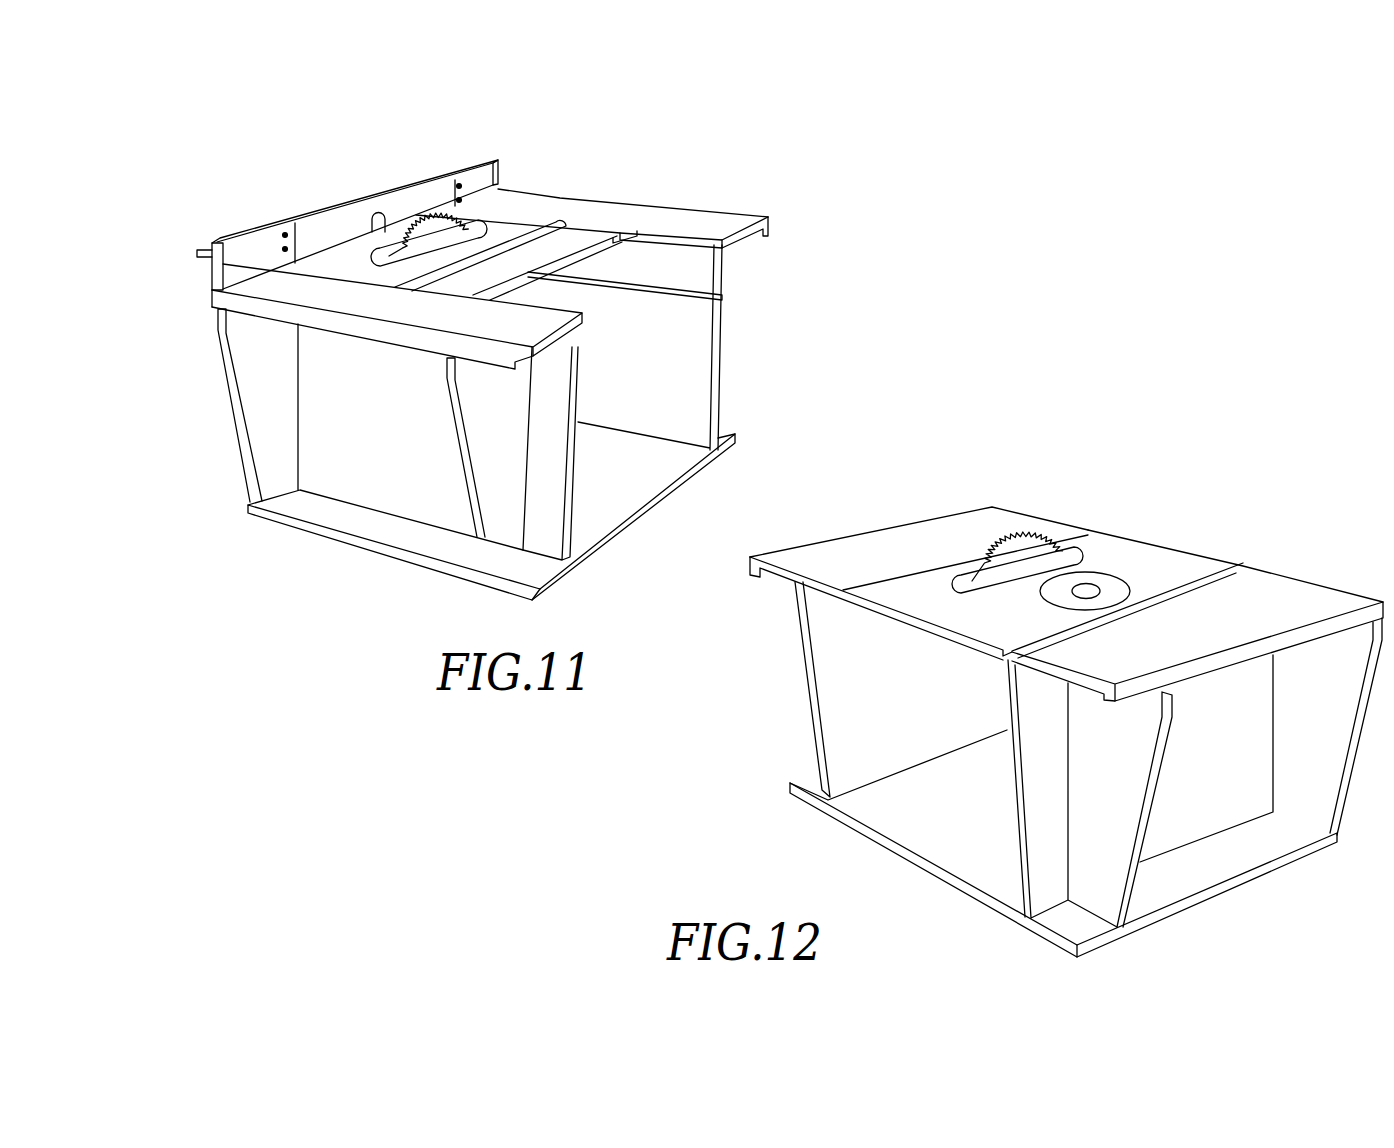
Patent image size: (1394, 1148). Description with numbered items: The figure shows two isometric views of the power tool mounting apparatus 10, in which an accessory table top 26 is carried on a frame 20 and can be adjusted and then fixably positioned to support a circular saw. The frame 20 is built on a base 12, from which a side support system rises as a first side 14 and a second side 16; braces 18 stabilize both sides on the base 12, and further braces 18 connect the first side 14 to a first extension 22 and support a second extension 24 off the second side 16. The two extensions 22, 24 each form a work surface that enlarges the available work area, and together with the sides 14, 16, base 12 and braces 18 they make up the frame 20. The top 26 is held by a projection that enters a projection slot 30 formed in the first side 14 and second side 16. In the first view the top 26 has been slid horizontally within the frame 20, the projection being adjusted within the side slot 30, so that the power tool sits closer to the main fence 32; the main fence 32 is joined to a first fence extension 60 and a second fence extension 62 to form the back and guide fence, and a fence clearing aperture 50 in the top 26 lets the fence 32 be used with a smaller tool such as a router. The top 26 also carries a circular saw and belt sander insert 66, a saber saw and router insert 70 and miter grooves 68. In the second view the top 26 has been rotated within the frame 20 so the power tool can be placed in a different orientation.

In FIG. 11, the power tool mounting apparatus 10 is at (643, 118).
In FIG. 12, the power tool mounting apparatus 10 is at (1235, 460).
In FIG. 11, the base 12 is at (737, 437).
In FIG. 12, the base 12 is at (907, 865).
In FIG. 11, the first side 14 is at (722, 346).
In FIG. 12, the first side 14 is at (1012, 862).
In FIG. 11, the second side 16 is at (576, 510).
In FIG. 12, the second side 16 is at (810, 723).
In FIG. 11, the braces 18 is at (236, 433).
In FIG. 12, the braces 18 is at (1351, 748).
In FIG. 11, the frame 20 is at (722, 389).
In FIG. 11, the first extension 22 is at (746, 216).
In FIG. 12, the first extension 22 is at (1302, 593).
In FIG. 11, the second extension 24 is at (265, 312).
In FIG. 12, the second extension 24 is at (1007, 518).
In FIG. 11, the accessory table top 26 is at (199, 257).
In FIG. 12, the accessory table top 26 is at (1222, 568).
In FIG. 11, the projection slot 30 is at (724, 295).
In FIG. 11, the main fence 32 is at (328, 206).
In FIG. 11, the fence clearing aperture 50 is at (392, 212).
In FIG. 11, the first fence extension 60 is at (467, 160).
In FIG. 11, the second fence extension 62 is at (248, 230).
In FIG. 11, the circular saw and belt sander insert 66 is at (490, 226).
In FIG. 12, the circular saw and belt sander insert 66 is at (1123, 573).
In FIG. 12, the miter grooves 68 is at (1089, 535).
In FIG. 12, the saber saw and router insert 70 is at (1180, 557).